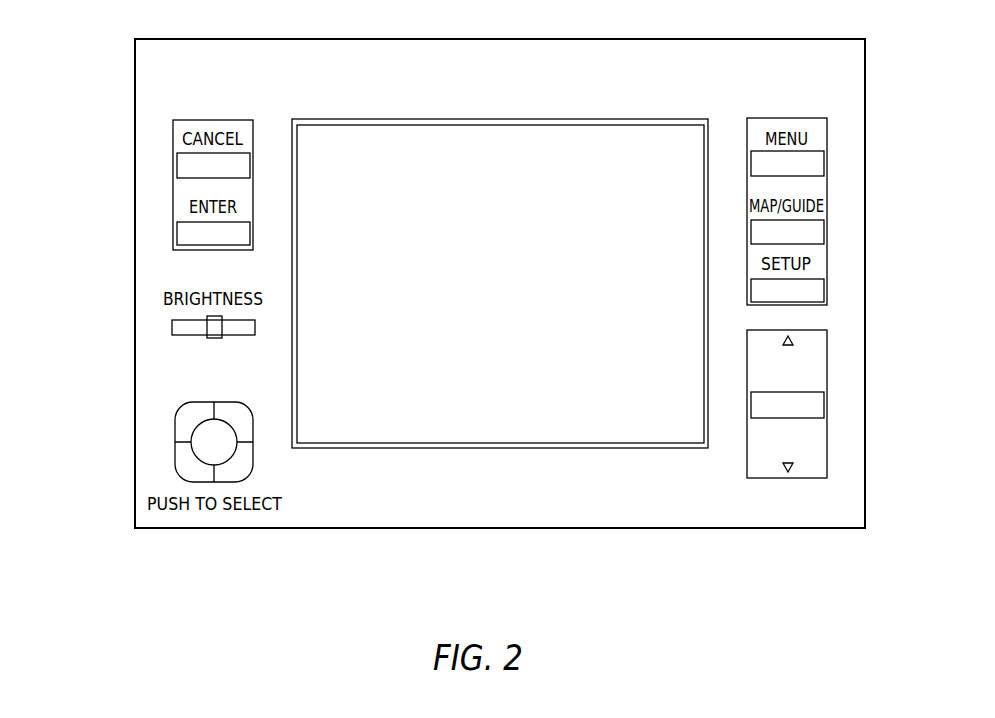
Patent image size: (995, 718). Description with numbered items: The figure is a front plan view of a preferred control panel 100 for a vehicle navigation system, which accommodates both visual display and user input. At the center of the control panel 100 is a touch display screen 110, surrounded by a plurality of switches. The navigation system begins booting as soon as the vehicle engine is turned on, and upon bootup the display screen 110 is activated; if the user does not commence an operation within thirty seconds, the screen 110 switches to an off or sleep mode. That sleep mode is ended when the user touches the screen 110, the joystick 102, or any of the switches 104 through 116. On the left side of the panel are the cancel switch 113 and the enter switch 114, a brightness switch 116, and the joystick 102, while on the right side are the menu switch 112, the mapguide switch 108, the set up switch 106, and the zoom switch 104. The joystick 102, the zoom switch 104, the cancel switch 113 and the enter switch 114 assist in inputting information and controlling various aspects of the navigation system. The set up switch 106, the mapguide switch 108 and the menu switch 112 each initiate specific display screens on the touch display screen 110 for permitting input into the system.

The control panel 100 is at (127, 222).
The joystick 102 is at (200, 453).
The zoom switch 104 is at (817, 405).
The set up switch 106 is at (815, 295).
The mapguide switch 108 is at (815, 232).
The touch display screen 110 is at (490, 420).
The menu switch 112 is at (808, 165).
The cancel switch 113 is at (190, 168).
The enter switch 114 is at (183, 240).
The switch 116 is at (172, 326).